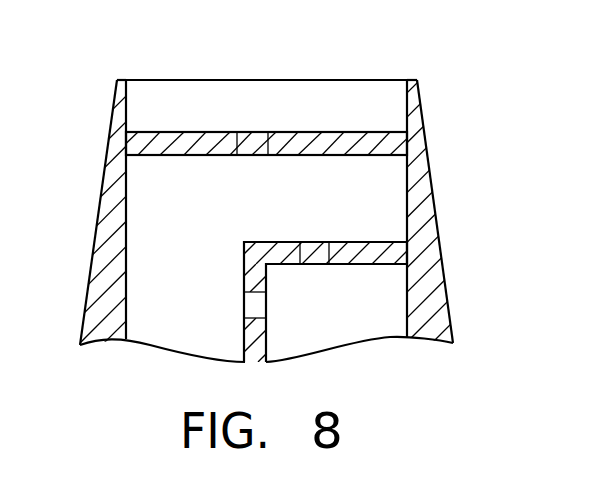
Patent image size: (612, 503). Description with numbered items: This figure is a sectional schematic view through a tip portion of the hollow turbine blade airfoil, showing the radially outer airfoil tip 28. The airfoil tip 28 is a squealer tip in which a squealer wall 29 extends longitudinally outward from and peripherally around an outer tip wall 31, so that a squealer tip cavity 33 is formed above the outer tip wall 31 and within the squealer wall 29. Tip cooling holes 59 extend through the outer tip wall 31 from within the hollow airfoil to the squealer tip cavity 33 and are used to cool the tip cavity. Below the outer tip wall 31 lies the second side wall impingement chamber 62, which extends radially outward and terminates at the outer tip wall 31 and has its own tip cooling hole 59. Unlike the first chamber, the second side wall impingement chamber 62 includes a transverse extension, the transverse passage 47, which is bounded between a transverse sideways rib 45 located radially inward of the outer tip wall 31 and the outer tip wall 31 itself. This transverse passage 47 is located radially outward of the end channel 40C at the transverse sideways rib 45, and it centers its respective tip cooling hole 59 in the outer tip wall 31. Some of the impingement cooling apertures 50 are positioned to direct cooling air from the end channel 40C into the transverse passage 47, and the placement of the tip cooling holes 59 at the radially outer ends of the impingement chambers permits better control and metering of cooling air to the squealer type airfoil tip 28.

The airfoil tip 28 is at (435, 227).
The squealer wall 29 is at (413, 93).
The outer tip wall 31 is at (348, 130).
The squealer tip cavity 33 is at (148, 105).
The tip cooling holes 59 is at (245, 147).
The transverse passage 47 is at (372, 190).
The transverse sideways rib 45 is at (262, 243).
The impingement cooling apertures 50 is at (305, 255).
The second side wall impingement chamber 62 is at (198, 327).
The end channel 40C is at (362, 318).